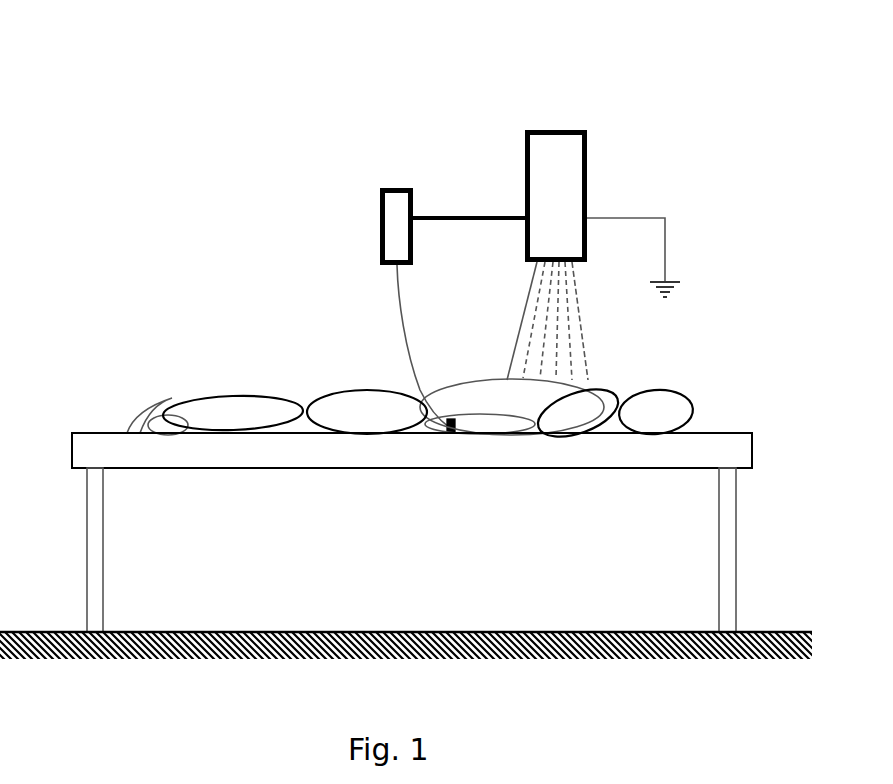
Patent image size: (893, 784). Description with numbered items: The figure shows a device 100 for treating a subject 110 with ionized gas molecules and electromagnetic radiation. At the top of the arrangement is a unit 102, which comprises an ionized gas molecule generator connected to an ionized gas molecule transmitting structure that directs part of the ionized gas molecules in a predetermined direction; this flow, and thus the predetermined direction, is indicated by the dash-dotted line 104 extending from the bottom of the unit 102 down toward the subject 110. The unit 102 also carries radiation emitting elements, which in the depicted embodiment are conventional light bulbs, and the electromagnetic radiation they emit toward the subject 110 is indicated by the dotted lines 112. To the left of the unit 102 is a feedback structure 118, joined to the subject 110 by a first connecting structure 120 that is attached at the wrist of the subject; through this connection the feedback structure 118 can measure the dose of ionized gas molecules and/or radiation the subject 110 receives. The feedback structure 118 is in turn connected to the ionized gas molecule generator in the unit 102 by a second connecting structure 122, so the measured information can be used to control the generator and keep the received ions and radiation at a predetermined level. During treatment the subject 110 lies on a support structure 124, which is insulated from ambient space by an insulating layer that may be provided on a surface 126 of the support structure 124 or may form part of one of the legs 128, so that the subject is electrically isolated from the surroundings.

The device 100 is at (185, 155).
The unit 102 is at (575, 189).
The dash-dotted line 104 is at (587, 362).
The subject 110 is at (511, 409).
The dotted lines 112 is at (512, 343).
The feedback structure 118 is at (394, 237).
The first connecting structure 120 is at (403, 334).
The second connecting structure 122 is at (463, 216).
The support structure 124 is at (500, 462).
The surface 126 is at (102, 427).
The legs 128 is at (95, 547).